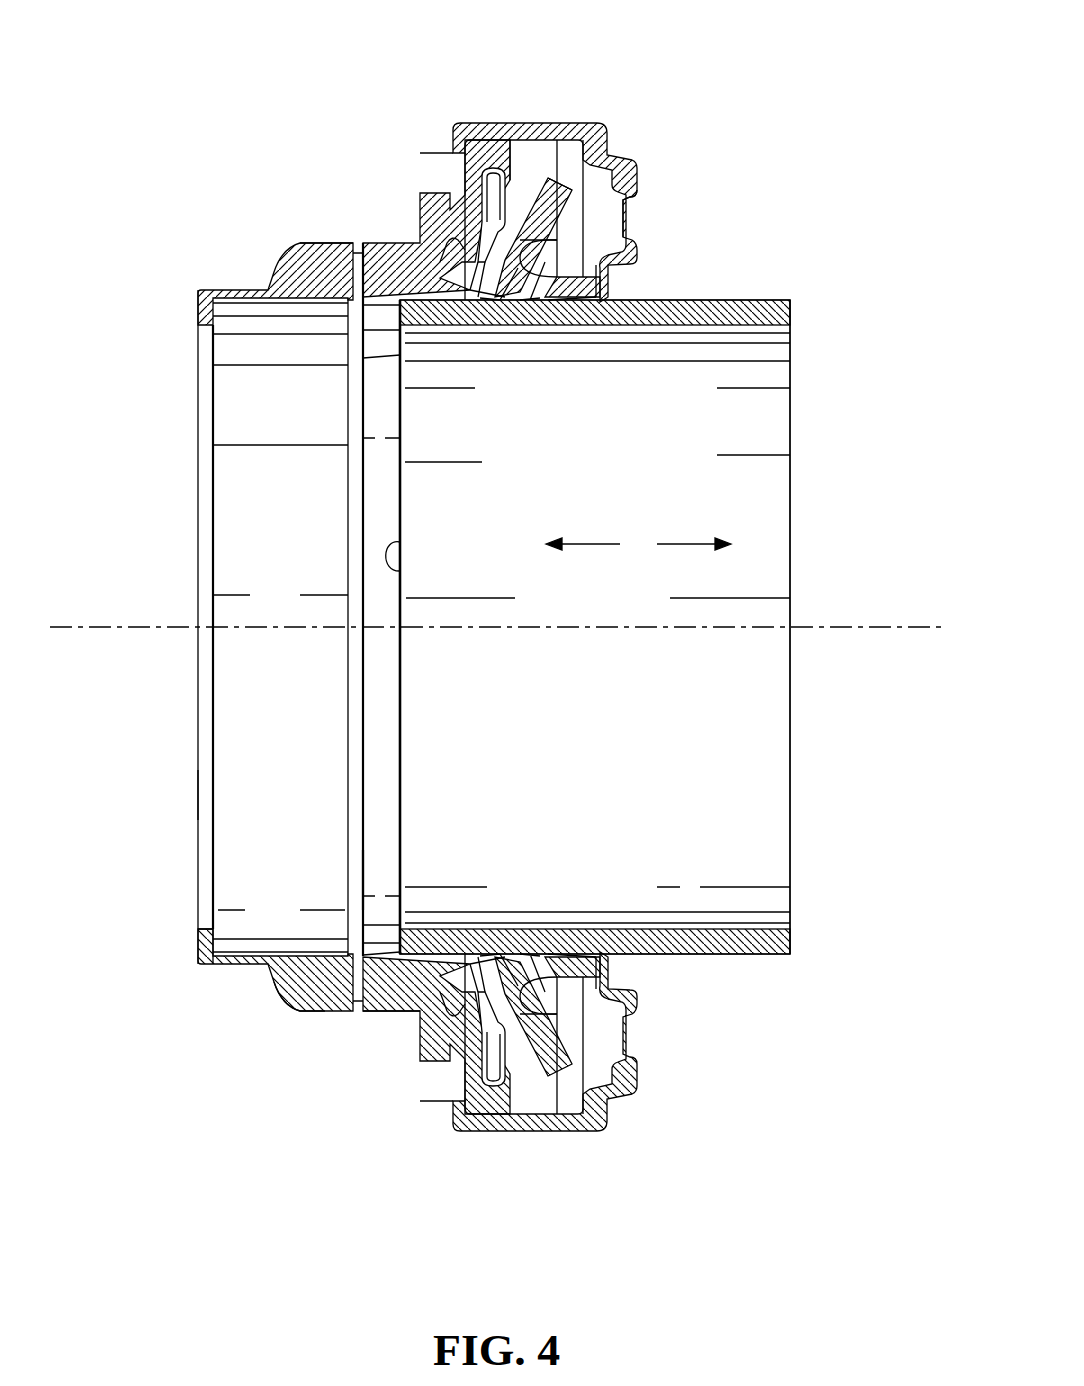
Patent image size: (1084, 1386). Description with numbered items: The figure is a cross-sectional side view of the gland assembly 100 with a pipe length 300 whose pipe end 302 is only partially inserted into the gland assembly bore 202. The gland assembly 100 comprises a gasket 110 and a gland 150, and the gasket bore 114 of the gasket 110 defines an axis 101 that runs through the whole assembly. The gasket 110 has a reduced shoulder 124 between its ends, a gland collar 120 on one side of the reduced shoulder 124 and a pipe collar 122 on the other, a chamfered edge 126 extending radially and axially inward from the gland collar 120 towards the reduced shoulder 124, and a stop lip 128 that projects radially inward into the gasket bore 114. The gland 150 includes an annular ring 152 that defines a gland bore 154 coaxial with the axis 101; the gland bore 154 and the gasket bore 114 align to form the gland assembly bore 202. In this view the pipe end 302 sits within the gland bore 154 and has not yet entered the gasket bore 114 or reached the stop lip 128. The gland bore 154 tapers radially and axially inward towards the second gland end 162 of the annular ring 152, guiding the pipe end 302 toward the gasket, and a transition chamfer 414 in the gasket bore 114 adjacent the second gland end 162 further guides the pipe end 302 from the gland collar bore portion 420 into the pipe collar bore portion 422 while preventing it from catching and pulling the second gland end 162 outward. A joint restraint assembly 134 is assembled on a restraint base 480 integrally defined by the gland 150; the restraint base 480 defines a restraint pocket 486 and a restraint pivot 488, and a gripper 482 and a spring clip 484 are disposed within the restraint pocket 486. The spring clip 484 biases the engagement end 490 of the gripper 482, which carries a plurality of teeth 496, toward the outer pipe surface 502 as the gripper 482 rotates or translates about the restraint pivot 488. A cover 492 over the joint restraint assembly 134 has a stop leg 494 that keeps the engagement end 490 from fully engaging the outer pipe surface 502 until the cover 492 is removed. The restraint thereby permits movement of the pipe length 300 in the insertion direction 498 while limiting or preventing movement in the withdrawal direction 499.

The gland assembly 100 is at (314, 97).
The axis 101 is at (870, 627).
The gasket 110 is at (300, 263).
The gasket bore 114 is at (232, 406).
The gland collar 120 is at (400, 1010).
The pipe collar 122 is at (227, 963).
The reduced shoulder 124 is at (263, 973).
The chamfered edge 126 is at (295, 1010).
The stop lip 128 is at (200, 793).
The joint restraint assembly 134 is at (540, 172).
The gland 150 is at (435, 1083).
The annular ring 152 is at (383, 990).
The gland bore 154 is at (383, 418).
The second gland end 162 is at (350, 267).
The gland assembly bore 202 is at (213, 870).
The pipe length 300 is at (745, 262).
The pipe end 302 is at (400, 541).
The transition chamfer 414 is at (355, 878).
The gland collar bore portion 420 is at (380, 253).
The pipe collar bore portion 422 is at (238, 713).
The restraint base 480 is at (463, 193).
The gripper 482 is at (575, 188).
The spring clip 484 is at (490, 170).
The restraint pocket 486 is at (545, 178).
The restraint pivot 488 is at (552, 262).
The engagement end 490 is at (508, 320).
The cover 492 is at (638, 240).
The stop leg 494 is at (548, 318).
The teeth 496 is at (510, 965).
The insertion direction 498 is at (607, 544).
The withdrawal direction 499 is at (670, 544).
The outer pipe surface 502 is at (777, 300).